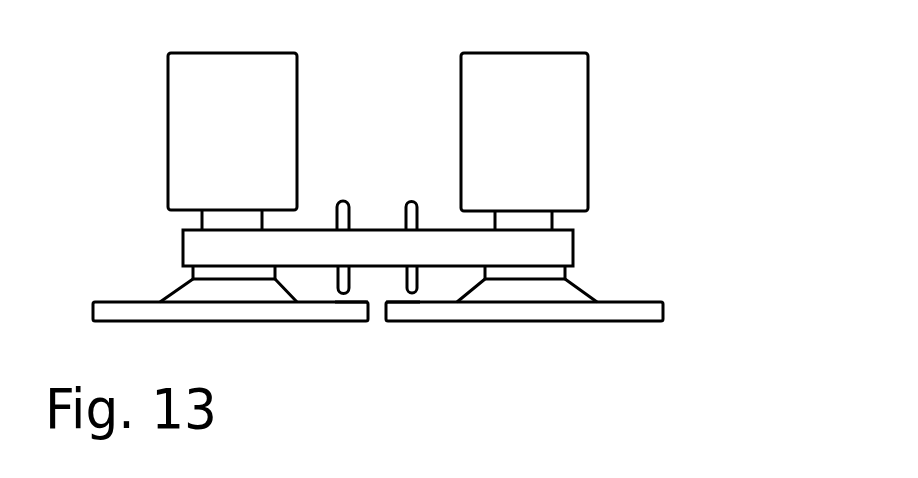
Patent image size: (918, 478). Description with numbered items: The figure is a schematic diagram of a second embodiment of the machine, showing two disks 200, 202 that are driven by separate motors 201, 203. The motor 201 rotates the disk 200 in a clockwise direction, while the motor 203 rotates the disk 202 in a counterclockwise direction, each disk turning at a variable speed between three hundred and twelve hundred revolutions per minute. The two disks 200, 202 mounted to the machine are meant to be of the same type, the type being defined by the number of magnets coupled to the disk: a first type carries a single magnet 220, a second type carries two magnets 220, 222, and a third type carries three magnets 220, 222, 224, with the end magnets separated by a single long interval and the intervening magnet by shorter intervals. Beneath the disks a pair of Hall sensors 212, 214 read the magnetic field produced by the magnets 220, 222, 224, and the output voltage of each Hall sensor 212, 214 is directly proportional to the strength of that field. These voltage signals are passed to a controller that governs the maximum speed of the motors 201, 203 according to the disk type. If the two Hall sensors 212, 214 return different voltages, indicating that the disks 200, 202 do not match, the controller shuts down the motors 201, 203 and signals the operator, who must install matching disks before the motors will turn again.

The disk 200 is at (118, 301).
The motor 201 is at (168, 112).
The motor 203 is at (461, 72).
The disk 202 is at (623, 322).
The Hall sensor 212 is at (348, 186).
The Hall sensor 214 is at (401, 186).
The magnet 220 is at (411, 304).
The magnet 222 is at (298, 302).
The magnet 224 is at (207, 301).